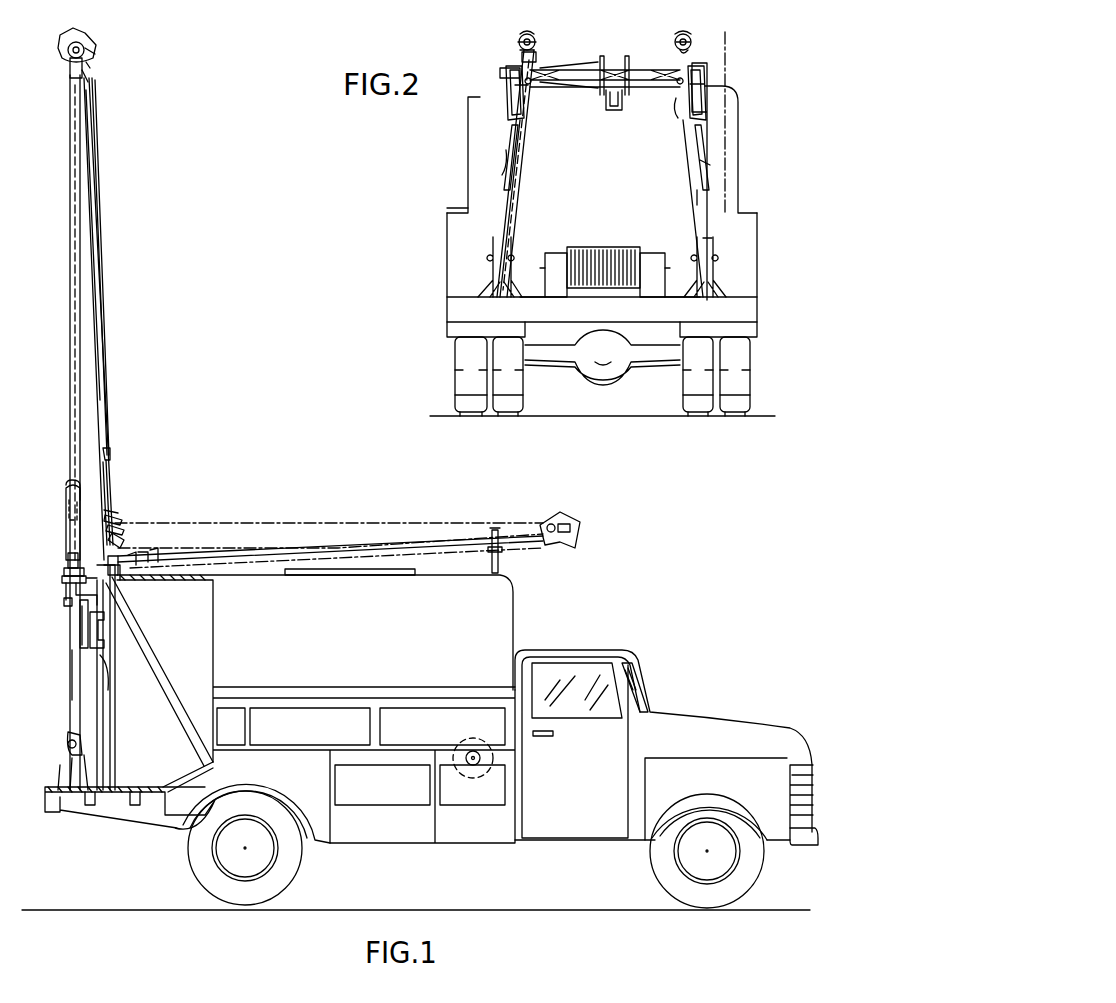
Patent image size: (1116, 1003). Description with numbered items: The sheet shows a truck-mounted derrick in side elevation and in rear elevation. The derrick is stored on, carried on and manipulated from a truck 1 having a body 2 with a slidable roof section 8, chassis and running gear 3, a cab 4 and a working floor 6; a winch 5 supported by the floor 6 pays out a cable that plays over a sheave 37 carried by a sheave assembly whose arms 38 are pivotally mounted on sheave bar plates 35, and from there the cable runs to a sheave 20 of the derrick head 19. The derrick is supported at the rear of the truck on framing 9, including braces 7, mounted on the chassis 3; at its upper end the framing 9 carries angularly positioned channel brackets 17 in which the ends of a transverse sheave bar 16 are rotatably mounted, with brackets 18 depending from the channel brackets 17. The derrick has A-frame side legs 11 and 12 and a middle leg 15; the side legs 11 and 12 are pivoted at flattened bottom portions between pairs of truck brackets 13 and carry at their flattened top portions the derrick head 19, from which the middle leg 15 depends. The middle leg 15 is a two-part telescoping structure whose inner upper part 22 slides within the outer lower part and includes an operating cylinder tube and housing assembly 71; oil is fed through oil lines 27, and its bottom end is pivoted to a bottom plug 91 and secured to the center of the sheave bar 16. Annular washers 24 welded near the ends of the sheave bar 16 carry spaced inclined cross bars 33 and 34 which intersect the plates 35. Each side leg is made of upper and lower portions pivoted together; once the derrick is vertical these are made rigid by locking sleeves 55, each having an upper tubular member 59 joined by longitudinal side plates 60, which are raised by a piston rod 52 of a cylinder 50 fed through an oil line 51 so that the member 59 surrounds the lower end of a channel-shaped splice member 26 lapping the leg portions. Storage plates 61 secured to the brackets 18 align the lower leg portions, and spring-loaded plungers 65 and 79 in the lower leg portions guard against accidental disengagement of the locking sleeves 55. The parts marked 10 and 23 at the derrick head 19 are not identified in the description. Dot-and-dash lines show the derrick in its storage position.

In FIG. 1, the truck 1 is at (682, 712).
In FIG. 2, the truck 1 is at (741, 136).
In FIG. 1, the body 2 is at (508, 635).
In FIG. 2, the body 2 is at (467, 142).
In FIG. 1, the chassis and running gear 3 is at (302, 866).
In FIG. 2, the chassis and running gear 3 is at (636, 386).
In FIG. 1, the cab 4 is at (600, 648).
In FIG. 1, the winch 5 is at (495, 768).
In FIG. 2, the winch 5 is at (641, 268).
In FIG. 1, the working floor 6 is at (150, 792).
In FIG. 2, the working floor 6 is at (536, 305).
In FIG. 1, the braces 7 is at (153, 640).
In FIG. 1, the slidable roof section 8 is at (375, 570).
In FIG. 1, the framing 9 is at (100, 690).
In FIG. 2, the framing 9 is at (512, 152).
In FIG. 1, the pin 10 is at (86, 65).
In FIG. 1, the A-frame side leg 11 is at (69, 278).
In FIG. 2, the A-frame side leg 11 is at (712, 60).
In FIG. 2, the A-frame side leg 12 is at (499, 193).
In FIG. 1, the truck brackets 13 is at (70, 765).
In FIG. 2, the truck brackets 13 is at (495, 270).
In FIG. 1, the middle leg 15 is at (97, 338).
In FIG. 1, the sheave bar 16 is at (120, 578).
In FIG. 2, the sheave bar 16 is at (572, 66).
In FIG. 2, the channel brackets 17 is at (510, 74).
In FIG. 1, the brackets 18 is at (118, 590).
In FIG. 2, the brackets 18 is at (680, 116).
In FIG. 1, the derrick head 19 is at (99, 45).
In FIG. 1, the sheave 20 is at (88, 60).
In FIG. 1, the telescoping inner upper part 22 is at (88, 80).
In FIG. 1, the sheave 23 is at (97, 30).
In FIG. 2, the annular washers 24 is at (536, 64).
In FIG. 1, the splice member 26 is at (66, 490).
In FIG. 2, the splice member 26 is at (536, 36).
In FIG. 1, the oil line 27 is at (124, 530).
In FIG. 2, the inclined cross bar 33 is at (590, 70).
In FIG. 2, the inclined cross bar 34 is at (625, 88).
In FIG. 2, the sheave bar plates 35 is at (612, 64).
In FIG. 2, the sheave 37 is at (609, 110).
In FIG. 2, the sheave assembly arms 38 is at (604, 96).
In FIG. 1, the cylinder 50 is at (80, 632).
In FIG. 2, the cylinder 50 is at (512, 130).
In FIG. 1, the oil line 51 is at (108, 662).
In FIG. 2, the oil line 51 is at (510, 165).
In FIG. 1, the piston rod 52 is at (98, 614).
In FIG. 1, the locking sleeve 55 is at (63, 603).
In FIG. 2, the locking sleeve 55 is at (534, 108).
In FIG. 1, the upper tubular member 59 is at (64, 570).
In FIG. 1, the side plates 60 is at (70, 592).
In FIG. 1, the storage plates 61 is at (62, 579).
In FIG. 2, the plunger 65 is at (518, 88).
In FIG. 1, the operating cylinder tube and housing assembly 71 is at (108, 405).
In FIG. 2, the plunger 79 is at (532, 82).
In FIG. 1, the bottom plug 91 is at (120, 540).